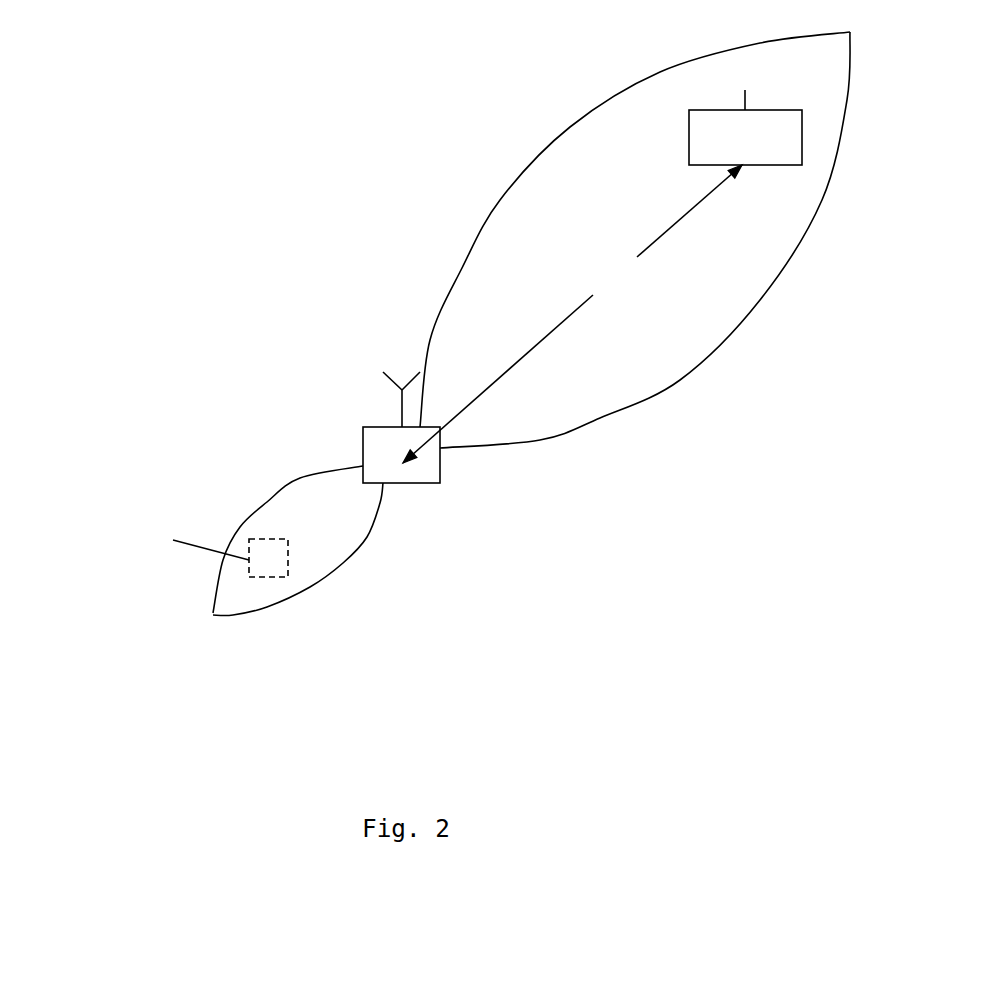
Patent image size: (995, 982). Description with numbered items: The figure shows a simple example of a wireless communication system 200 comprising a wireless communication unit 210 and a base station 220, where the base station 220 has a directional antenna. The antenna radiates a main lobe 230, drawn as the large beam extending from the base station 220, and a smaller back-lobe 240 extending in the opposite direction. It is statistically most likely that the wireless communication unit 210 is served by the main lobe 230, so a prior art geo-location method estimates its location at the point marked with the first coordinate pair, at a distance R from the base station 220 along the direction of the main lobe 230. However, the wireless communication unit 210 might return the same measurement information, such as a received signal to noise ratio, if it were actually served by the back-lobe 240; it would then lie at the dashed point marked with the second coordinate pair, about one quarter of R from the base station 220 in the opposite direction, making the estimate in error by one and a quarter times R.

The wireless communication system 200 is at (56, 91).
The wireless communication unit 210 is at (689, 140).
The base station 220 is at (363, 447).
The main lobe 230 is at (570, 127).
The back-lobe 240 is at (328, 577).